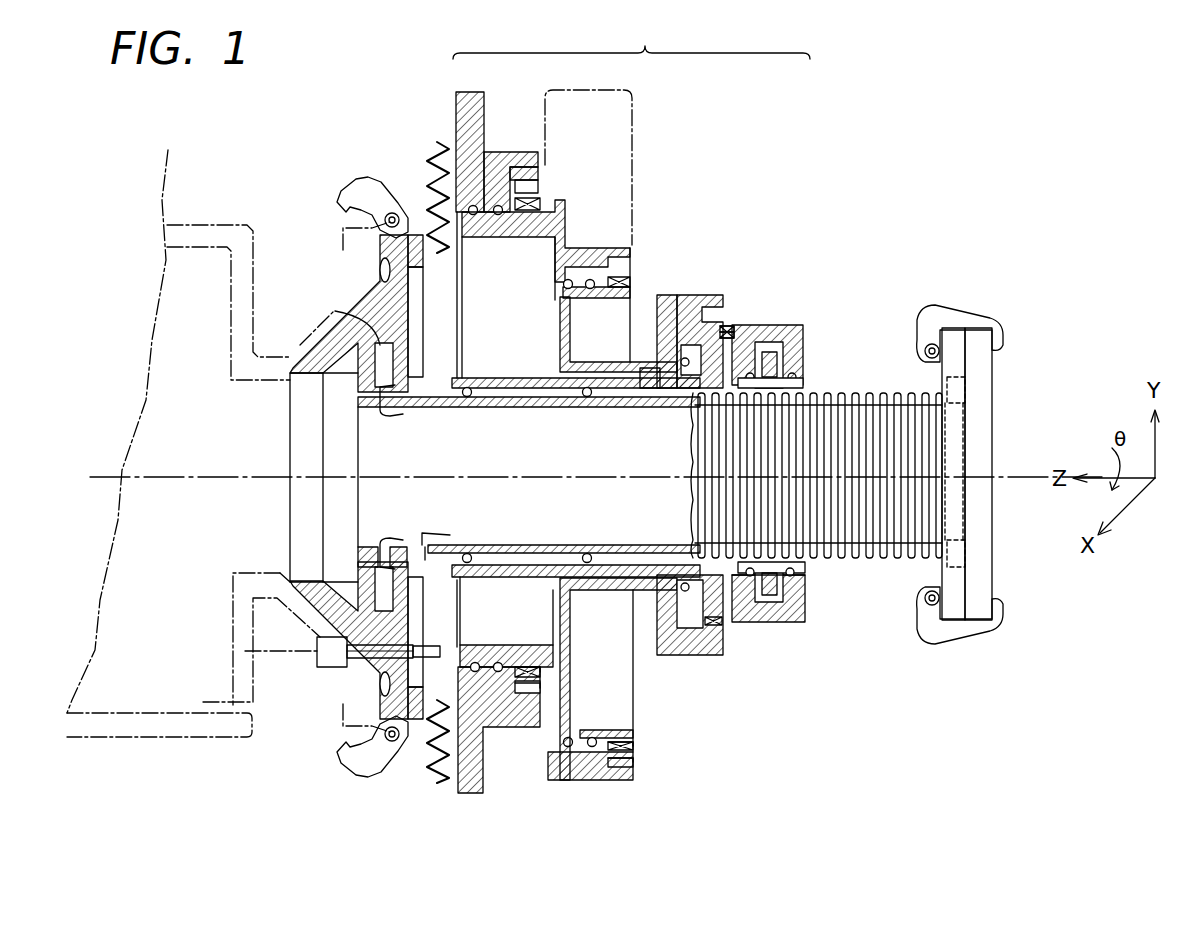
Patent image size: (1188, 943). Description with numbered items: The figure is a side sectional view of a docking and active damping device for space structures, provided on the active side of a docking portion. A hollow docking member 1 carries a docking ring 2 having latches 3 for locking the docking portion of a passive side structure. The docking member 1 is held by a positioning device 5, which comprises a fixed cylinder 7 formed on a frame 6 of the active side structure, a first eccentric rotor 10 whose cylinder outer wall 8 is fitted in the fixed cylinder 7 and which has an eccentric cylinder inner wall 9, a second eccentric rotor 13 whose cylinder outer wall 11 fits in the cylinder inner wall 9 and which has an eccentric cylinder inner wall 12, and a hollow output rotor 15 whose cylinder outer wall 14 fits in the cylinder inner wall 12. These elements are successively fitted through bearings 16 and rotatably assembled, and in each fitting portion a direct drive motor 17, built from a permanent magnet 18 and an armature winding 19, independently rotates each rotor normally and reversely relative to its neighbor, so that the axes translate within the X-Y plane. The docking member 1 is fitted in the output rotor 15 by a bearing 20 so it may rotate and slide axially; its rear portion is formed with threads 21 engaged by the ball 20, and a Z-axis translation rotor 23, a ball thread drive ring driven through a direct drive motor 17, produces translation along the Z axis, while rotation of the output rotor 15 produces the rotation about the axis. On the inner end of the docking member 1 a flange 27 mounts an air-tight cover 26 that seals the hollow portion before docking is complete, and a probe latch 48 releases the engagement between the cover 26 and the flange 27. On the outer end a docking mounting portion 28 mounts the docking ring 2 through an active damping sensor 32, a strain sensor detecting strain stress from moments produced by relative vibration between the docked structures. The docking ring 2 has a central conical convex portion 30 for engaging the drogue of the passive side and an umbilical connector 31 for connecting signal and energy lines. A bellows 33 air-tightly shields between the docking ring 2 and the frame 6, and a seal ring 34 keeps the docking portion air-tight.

The docking member 1 is at (440, 410).
The docking ring 2 is at (330, 312).
The latch 3 is at (362, 180).
The positioning device 5 is at (631, 37).
The frame 6 is at (456, 135).
The fixed cylinder 7 is at (500, 150).
The cylinder outer wall 8 is at (540, 170).
The cylinder inner wall 9 is at (560, 284).
The first eccentric rotor 10 is at (612, 250).
The cylinder outer wall 11 is at (580, 300).
The cylinder inner wall 12 is at (695, 656).
The second eccentric rotor 13 is at (670, 294).
The cylinder outer wall 14 is at (708, 295).
The output rotor 15 is at (741, 624).
The bearings 16 is at (482, 643).
The direct drive motor 17 is at (803, 268).
The permanent magnet 18 is at (740, 330).
The armature winding 19 is at (738, 320).
The bearing 20 is at (470, 552).
The threads 21 is at (860, 392).
The Z-axis translation rotor 23 is at (805, 612).
The air-tight cover 26 is at (993, 557).
The flange 27 is at (965, 363).
The docking mounting portion 28 is at (378, 584).
The conical convex portion 30 is at (317, 350).
The umbilical connector 31 is at (362, 672).
The active damping sensor 32 is at (340, 312).
The bellows 33 is at (433, 785).
The seal ring 34 is at (378, 690).
The probe latch 48 is at (950, 306).